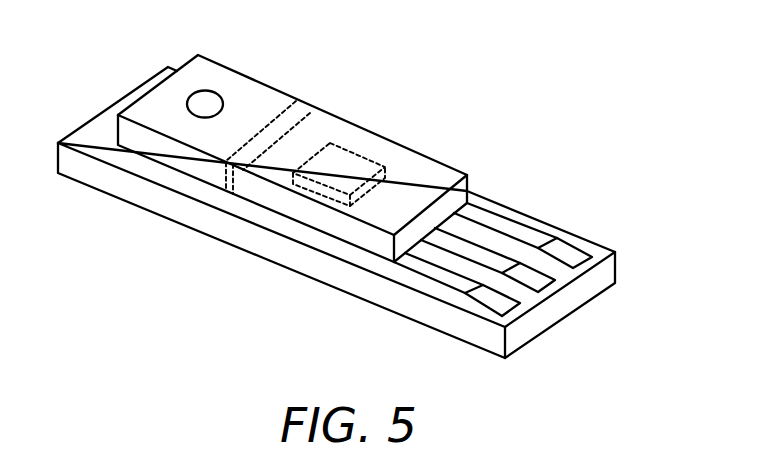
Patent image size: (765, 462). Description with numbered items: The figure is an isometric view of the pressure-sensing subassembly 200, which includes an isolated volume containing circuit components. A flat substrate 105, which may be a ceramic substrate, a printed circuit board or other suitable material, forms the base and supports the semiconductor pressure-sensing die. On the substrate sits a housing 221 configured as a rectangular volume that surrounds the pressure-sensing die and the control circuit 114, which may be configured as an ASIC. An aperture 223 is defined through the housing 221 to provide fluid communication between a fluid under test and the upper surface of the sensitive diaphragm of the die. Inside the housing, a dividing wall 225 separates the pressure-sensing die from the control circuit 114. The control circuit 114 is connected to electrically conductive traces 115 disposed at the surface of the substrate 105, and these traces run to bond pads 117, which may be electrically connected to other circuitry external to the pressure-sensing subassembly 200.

The pressure-sensing subassembly 200 is at (545, 89).
The substrate 105 is at (157, 203).
The housing 221 is at (228, 84).
The aperture 223 is at (203, 105).
The dividing wall 225 is at (285, 125).
The control circuit 114 is at (347, 155).
The electrically conductive traces 115 is at (528, 206).
The bond pads 117 is at (497, 293).